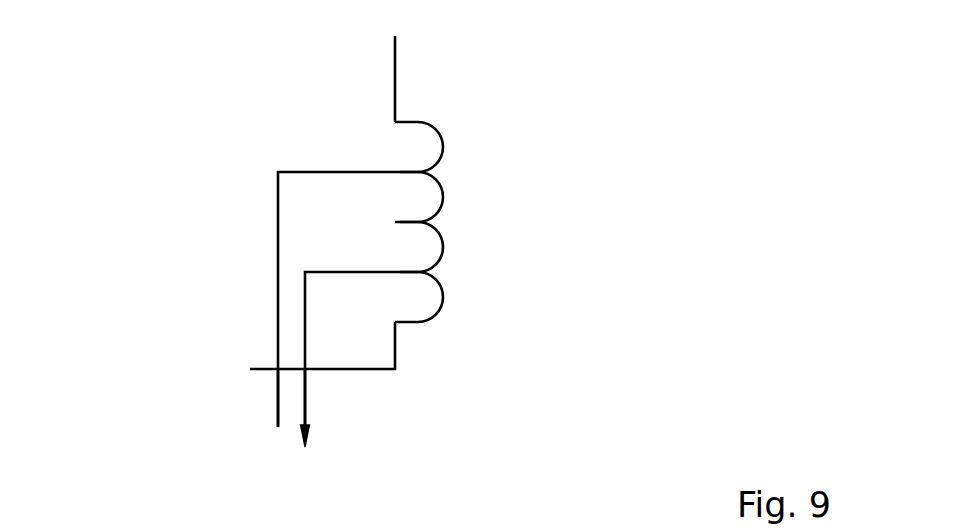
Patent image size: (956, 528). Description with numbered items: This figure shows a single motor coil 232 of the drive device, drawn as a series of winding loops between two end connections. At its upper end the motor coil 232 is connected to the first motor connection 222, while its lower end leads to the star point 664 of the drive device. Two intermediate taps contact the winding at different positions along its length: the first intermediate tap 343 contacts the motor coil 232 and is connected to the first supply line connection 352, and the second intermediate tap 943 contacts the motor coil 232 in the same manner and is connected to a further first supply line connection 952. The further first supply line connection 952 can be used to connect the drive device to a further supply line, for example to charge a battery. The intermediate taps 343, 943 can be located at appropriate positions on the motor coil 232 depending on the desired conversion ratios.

The first motor connection 222 is at (395, 36).
The first motor coil 232 is at (480, 225).
The second intermediate tap 943 is at (332, 172).
The first intermediate tap 343 is at (350, 272).
The star point 664 is at (250, 369).
The further first supply line connection 952 is at (277, 405).
The first supply line connection 352 is at (306, 403).